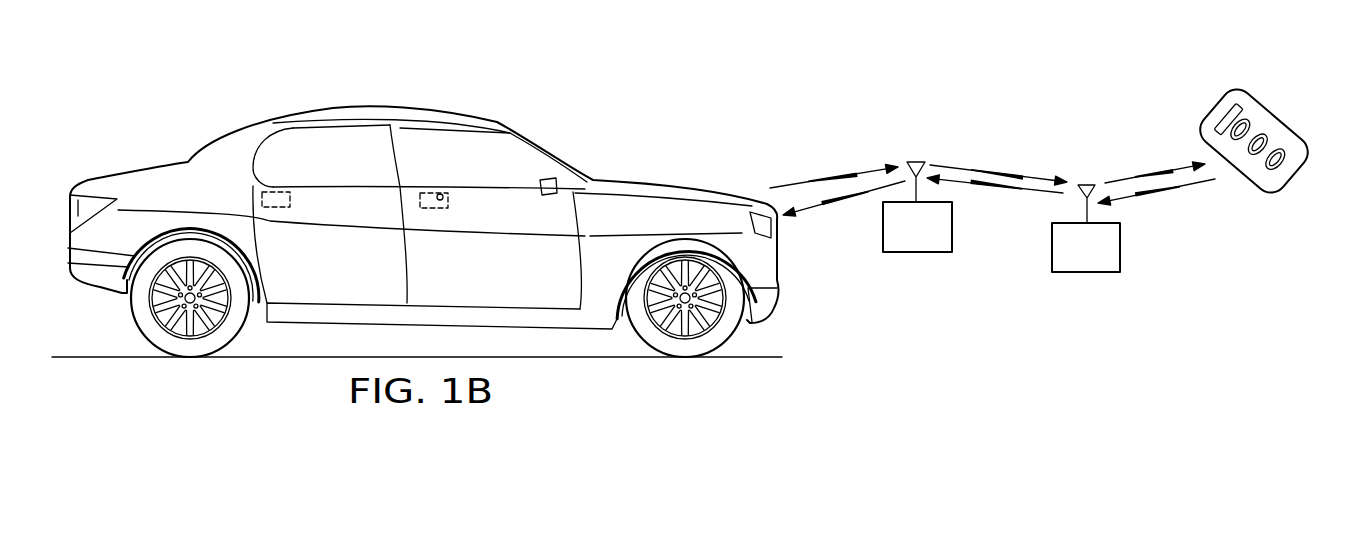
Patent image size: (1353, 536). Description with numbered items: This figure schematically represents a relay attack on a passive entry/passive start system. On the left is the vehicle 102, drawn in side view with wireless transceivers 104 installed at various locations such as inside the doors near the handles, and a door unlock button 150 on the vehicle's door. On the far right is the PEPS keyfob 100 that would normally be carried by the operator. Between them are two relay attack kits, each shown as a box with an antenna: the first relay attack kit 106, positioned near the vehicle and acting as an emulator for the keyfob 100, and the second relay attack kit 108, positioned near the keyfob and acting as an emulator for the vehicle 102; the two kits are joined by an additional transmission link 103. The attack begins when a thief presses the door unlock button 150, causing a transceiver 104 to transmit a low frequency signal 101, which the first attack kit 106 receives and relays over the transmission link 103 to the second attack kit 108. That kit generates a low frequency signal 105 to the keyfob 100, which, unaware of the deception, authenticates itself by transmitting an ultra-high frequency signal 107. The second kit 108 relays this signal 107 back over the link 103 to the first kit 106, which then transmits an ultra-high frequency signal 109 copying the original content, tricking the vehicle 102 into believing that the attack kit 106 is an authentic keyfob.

The PEPS keyfob 100 is at (1285, 112).
The low frequency (LF) signal 101 is at (843, 172).
The vehicle 102 is at (370, 107).
The transmission link 103 is at (987, 170).
The wireless transceiver 104 is at (273, 208).
The LF signal 105 is at (1150, 173).
The first relay attack kit 106 is at (933, 252).
The ultra-high frequency (UHF) signal 107 is at (1168, 190).
The second relay attack kit 108 is at (1102, 272).
The UHF signal 109 is at (828, 203).
The door unlock button 150 is at (440, 194).